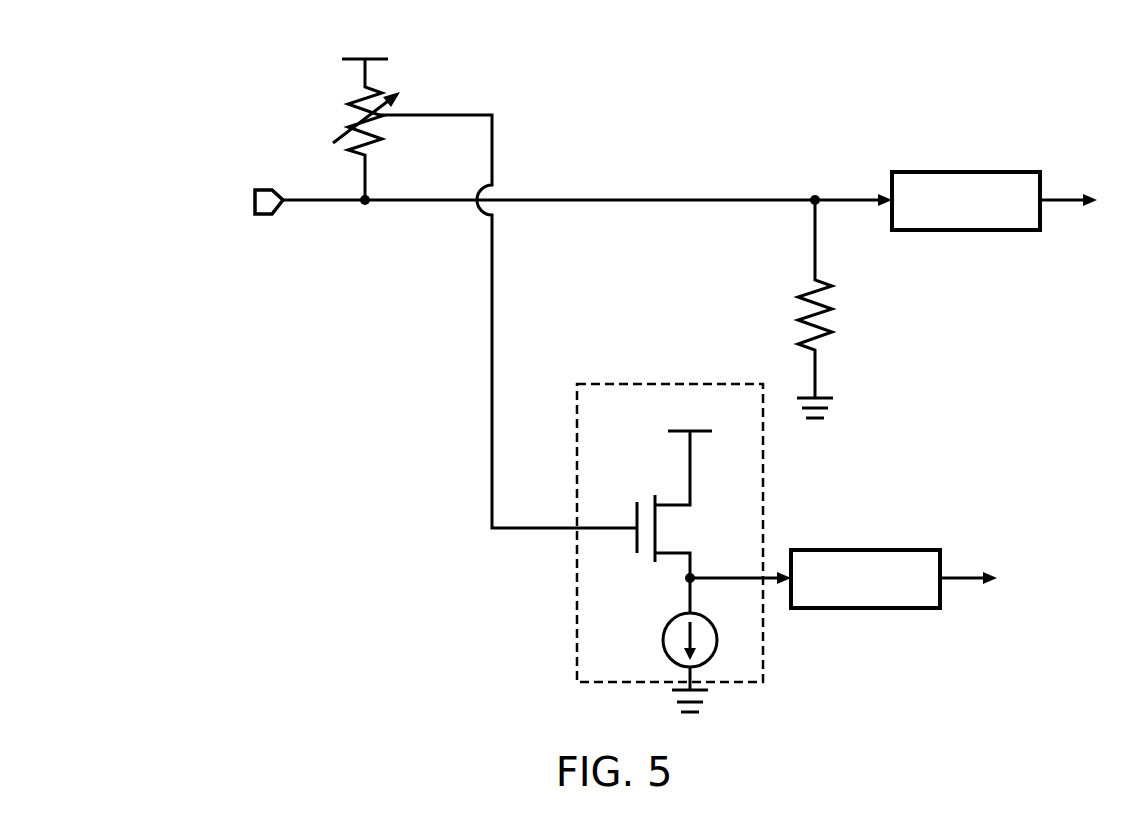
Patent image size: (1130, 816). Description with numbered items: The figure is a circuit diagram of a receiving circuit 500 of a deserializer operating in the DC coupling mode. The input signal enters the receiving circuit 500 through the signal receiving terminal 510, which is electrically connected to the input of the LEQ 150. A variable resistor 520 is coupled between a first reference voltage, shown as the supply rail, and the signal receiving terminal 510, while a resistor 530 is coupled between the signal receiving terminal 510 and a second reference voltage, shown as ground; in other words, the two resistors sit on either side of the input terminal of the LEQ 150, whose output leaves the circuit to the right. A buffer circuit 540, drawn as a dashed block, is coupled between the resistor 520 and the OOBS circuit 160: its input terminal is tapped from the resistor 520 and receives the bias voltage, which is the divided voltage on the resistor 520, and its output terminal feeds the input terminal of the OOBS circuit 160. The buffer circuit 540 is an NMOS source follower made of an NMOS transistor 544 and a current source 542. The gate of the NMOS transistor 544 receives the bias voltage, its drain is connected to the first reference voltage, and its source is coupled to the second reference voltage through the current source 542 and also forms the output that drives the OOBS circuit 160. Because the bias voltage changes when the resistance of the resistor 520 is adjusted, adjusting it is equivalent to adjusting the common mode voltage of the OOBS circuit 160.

The receiving circuit 500 is at (43, 108).
The signal receiving terminal 510 is at (364, 207).
The resistor 520 is at (348, 101).
The resistor 530 is at (800, 290).
The buffer circuit 540 is at (641, 383).
The current source 542 is at (663, 640).
The NMOS transistor 544 is at (640, 488).
The LEQ 150 is at (950, 172).
The OOBS circuit 160 is at (873, 550).